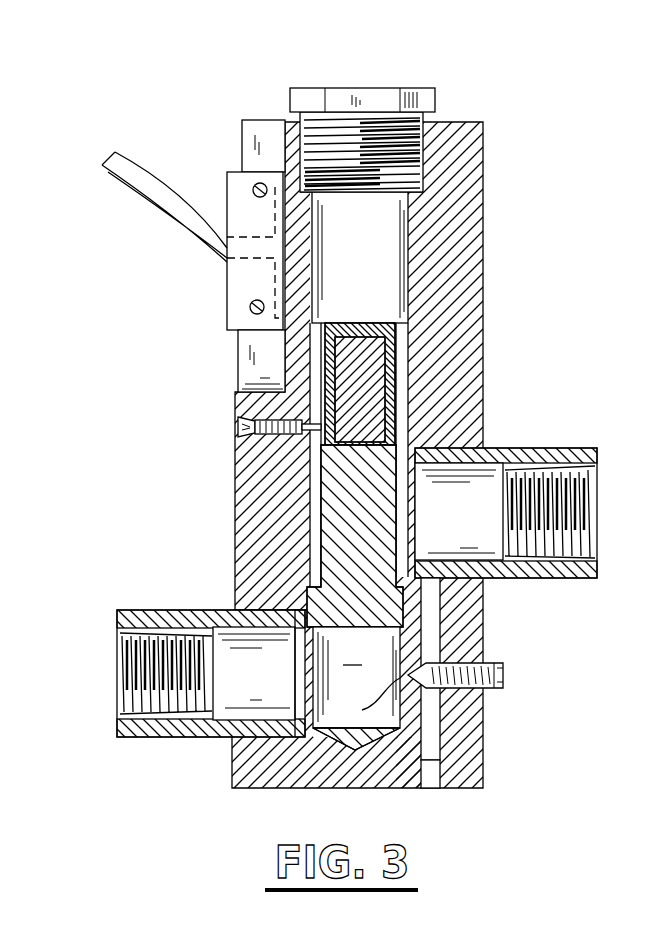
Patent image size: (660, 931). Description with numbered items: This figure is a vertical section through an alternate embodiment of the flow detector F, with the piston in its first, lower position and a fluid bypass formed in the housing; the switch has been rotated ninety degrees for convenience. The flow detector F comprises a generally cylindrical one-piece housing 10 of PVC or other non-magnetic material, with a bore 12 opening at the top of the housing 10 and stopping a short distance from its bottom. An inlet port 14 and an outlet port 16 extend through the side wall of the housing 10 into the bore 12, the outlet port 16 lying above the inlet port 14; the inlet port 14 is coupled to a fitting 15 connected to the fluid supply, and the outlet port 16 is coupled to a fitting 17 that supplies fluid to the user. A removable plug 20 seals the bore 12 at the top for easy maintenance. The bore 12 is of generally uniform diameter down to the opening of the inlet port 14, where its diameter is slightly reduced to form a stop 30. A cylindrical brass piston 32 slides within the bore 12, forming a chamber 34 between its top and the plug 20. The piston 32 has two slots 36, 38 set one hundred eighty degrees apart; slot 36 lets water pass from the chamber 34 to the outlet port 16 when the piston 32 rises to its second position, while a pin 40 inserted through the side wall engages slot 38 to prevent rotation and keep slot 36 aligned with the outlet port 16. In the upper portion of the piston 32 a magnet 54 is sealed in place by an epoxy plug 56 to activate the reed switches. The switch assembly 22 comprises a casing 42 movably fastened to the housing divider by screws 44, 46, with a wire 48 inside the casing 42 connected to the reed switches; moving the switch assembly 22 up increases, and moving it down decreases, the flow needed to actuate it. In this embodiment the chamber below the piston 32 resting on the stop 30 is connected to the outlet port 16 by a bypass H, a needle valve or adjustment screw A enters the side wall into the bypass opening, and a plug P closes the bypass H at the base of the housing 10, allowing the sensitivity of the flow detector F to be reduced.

The housing 10 is at (492, 179).
The bore 12 is at (402, 266).
The inlet port 14 is at (222, 612).
The fitting 15 is at (142, 741).
The outlet port 16 is at (470, 578).
The fitting 17 is at (583, 445).
The removable plug 20 is at (362, 88).
The switch assembly 22 is at (224, 287).
The stop 30 is at (403, 616).
The piston 32 is at (330, 480).
The chamber 34 is at (346, 252).
The slot 36 is at (403, 393).
The slot 38 is at (310, 535).
The pin 40 is at (245, 425).
The casing 42 is at (253, 193).
The screw 44 is at (235, 205).
The screw 46 is at (250, 311).
The wire 48 is at (107, 182).
The magnet 54 is at (380, 357).
The epoxy plug 56 is at (362, 275).
The adjustment screw A is at (503, 675).
The bypass H is at (444, 726).
The plug P is at (435, 777).
The flow detector F is at (514, 90).